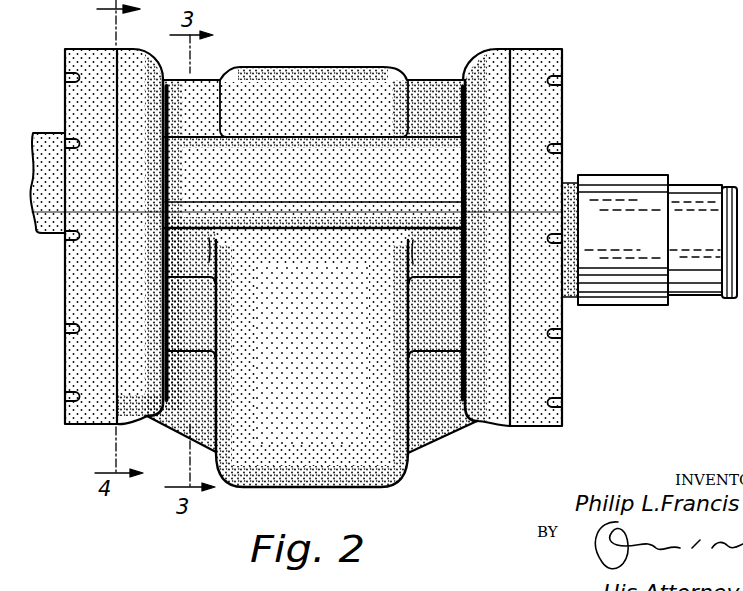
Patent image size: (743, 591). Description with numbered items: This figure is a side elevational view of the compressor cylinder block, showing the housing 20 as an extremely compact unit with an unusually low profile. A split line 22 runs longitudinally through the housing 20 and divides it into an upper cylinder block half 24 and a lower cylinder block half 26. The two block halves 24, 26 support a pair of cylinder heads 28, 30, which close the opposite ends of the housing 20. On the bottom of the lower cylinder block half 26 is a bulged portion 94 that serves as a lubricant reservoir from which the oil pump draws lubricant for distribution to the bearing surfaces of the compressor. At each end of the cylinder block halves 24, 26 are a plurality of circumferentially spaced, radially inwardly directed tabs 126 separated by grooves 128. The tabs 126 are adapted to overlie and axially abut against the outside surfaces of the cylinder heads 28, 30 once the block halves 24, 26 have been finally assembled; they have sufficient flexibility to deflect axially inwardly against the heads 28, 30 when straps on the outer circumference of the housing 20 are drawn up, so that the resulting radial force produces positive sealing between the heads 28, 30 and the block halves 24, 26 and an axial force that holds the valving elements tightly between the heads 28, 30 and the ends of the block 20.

The housing 20 is at (322, 67).
The split line 22 is at (290, 212).
The upper cylinder block half 24 is at (430, 85).
The lower cylinder block half 26 is at (448, 420).
The cylinder head 28 is at (45, 222).
The cylinder head 30 is at (637, 296).
The bulged portion 94 is at (330, 488).
The tabs 126 is at (72, 63).
The grooves 128 is at (68, 77).